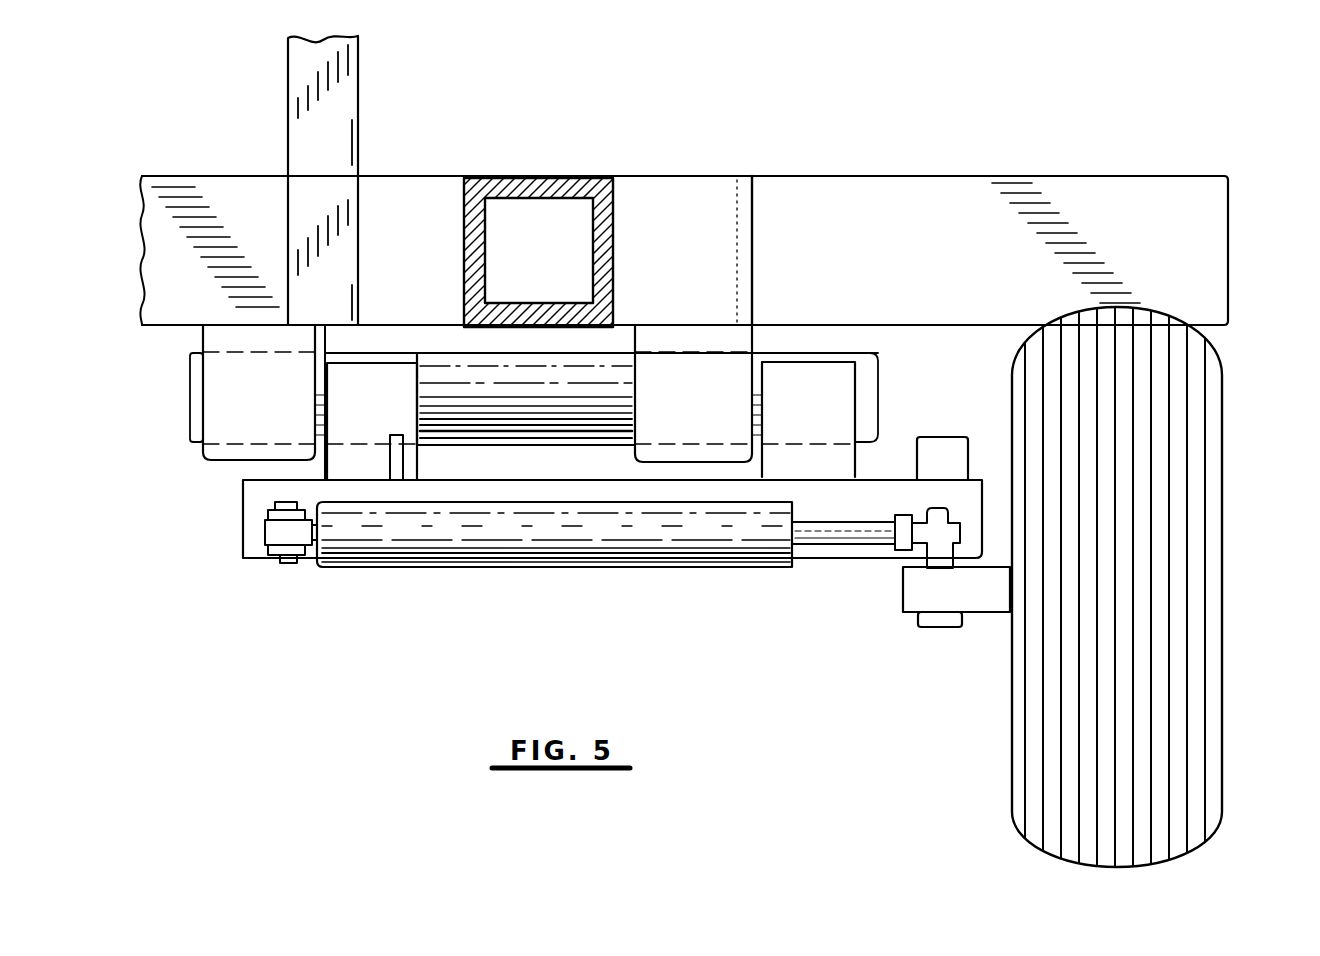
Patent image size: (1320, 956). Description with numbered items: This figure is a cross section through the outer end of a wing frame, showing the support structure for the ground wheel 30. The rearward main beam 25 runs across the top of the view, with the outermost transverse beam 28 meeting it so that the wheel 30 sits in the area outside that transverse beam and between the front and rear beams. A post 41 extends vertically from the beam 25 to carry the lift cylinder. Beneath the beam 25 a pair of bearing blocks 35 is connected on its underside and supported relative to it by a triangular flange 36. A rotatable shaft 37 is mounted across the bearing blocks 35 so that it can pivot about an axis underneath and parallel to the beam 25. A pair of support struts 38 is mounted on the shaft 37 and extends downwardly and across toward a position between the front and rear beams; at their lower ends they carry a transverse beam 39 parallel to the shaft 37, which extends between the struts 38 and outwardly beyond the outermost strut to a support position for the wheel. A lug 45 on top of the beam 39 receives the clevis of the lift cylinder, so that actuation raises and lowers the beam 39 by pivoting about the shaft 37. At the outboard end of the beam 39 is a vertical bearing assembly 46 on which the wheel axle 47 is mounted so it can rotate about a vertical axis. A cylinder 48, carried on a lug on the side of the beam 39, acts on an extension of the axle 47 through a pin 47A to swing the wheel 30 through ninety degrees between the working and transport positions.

The rearward main beam 25 is at (697, 175).
The outermost transverse beam 28 is at (536, 175).
The ground wheel 30 is at (1184, 585).
The bearing blocks 35 is at (234, 430).
The triangular flange 36 is at (756, 261).
The rotatable shaft 37 is at (442, 358).
The support struts 38 is at (347, 405).
The transverse beam 39 is at (242, 494).
The post 41 is at (302, 102).
The lug 45 is at (415, 458).
The vertical bearing assembly 46 is at (943, 450).
The axle 47 is at (915, 585).
The pin 47A is at (936, 508).
The cylinder 48 is at (542, 540).